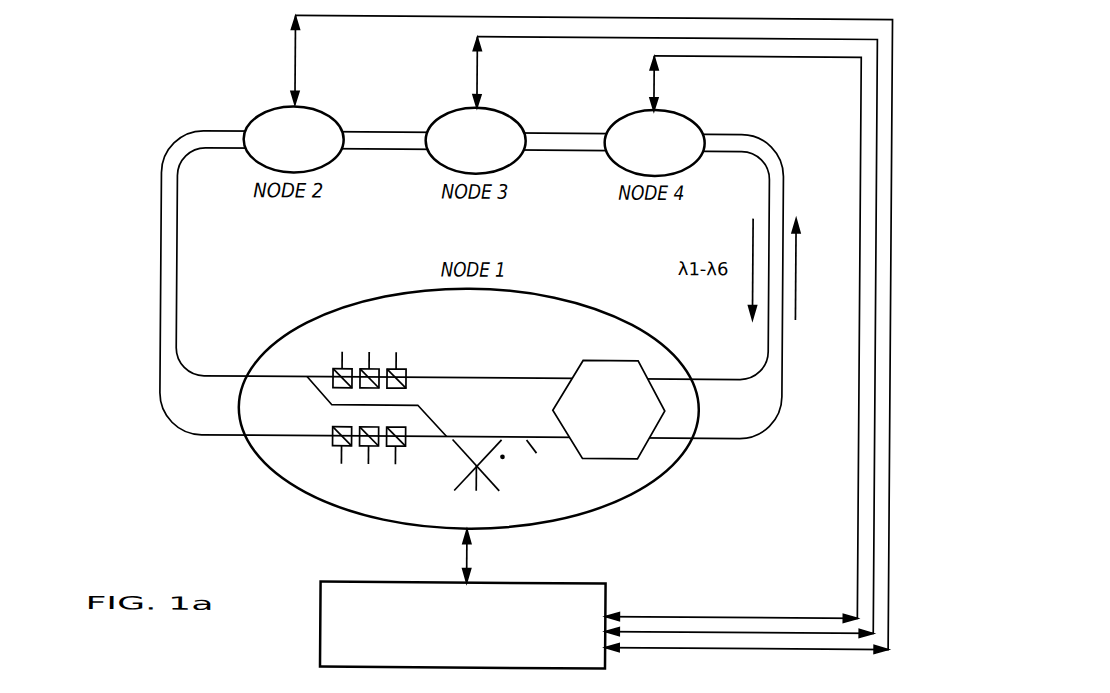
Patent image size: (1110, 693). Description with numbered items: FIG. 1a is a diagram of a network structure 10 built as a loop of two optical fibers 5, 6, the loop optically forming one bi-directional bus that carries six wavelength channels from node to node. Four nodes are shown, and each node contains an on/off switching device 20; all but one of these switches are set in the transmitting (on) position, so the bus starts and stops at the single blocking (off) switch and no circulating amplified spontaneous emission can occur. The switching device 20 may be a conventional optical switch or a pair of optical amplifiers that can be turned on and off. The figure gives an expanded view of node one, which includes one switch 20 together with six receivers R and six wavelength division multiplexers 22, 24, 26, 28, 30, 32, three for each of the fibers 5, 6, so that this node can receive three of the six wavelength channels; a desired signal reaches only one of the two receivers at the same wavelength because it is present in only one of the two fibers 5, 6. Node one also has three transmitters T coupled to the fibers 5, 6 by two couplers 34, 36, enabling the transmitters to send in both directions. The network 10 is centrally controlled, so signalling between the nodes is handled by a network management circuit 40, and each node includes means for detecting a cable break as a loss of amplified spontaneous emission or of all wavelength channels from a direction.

The optical fiber 5 is at (178, 141).
The optical fiber 6 is at (188, 154).
The network structure 10 is at (140, 285).
The on/off switching device 20 is at (605, 459).
The wavelength division multiplexer 22 is at (333, 372).
The wavelength division multiplexer 24 is at (379, 375).
The wavelength division multiplexer 26 is at (406, 373).
The wavelength division multiplexer 28 is at (333, 445).
The wavelength division multiplexer 30 is at (379, 448).
The wavelength division multiplexer 32 is at (406, 446).
The coupler 34 is at (442, 406).
The coupler 36 is at (519, 458).
The network management circuit 40 is at (322, 623).